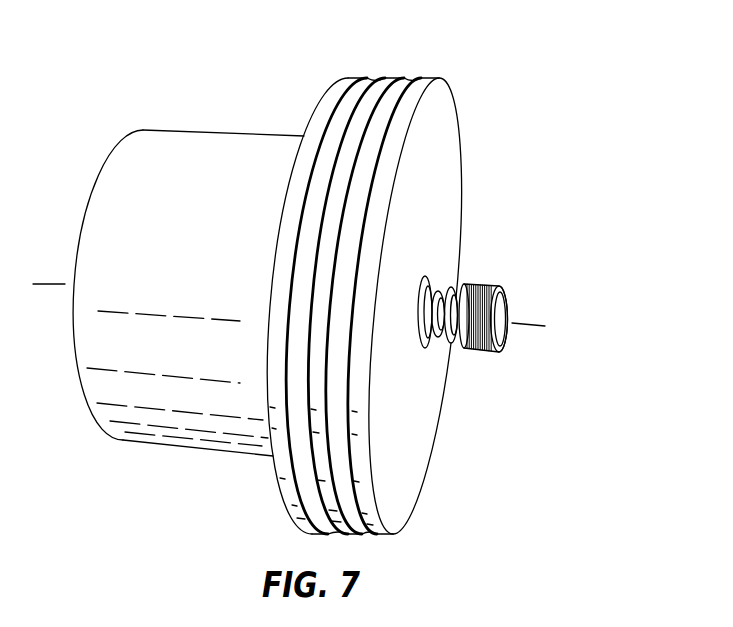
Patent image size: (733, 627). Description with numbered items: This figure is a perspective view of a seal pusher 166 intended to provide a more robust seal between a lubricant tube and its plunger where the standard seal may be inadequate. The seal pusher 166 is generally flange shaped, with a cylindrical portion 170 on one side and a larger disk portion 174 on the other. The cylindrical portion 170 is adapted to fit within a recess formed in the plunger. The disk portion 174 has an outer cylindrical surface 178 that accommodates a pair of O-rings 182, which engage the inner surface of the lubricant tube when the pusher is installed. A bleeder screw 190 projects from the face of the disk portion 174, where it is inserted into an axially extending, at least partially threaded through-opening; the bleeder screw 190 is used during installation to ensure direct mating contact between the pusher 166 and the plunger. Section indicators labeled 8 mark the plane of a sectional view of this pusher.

The seal pusher 166 is at (162, 82).
The cylindrical portion 170 is at (108, 228).
The outer cylindrical surface 178 is at (318, 118).
The O-rings 182 is at (404, 78).
The disk portion 174 is at (432, 100).
The bleeder screw 190 is at (482, 283).
The section line 8- 8 is at (522, 337).